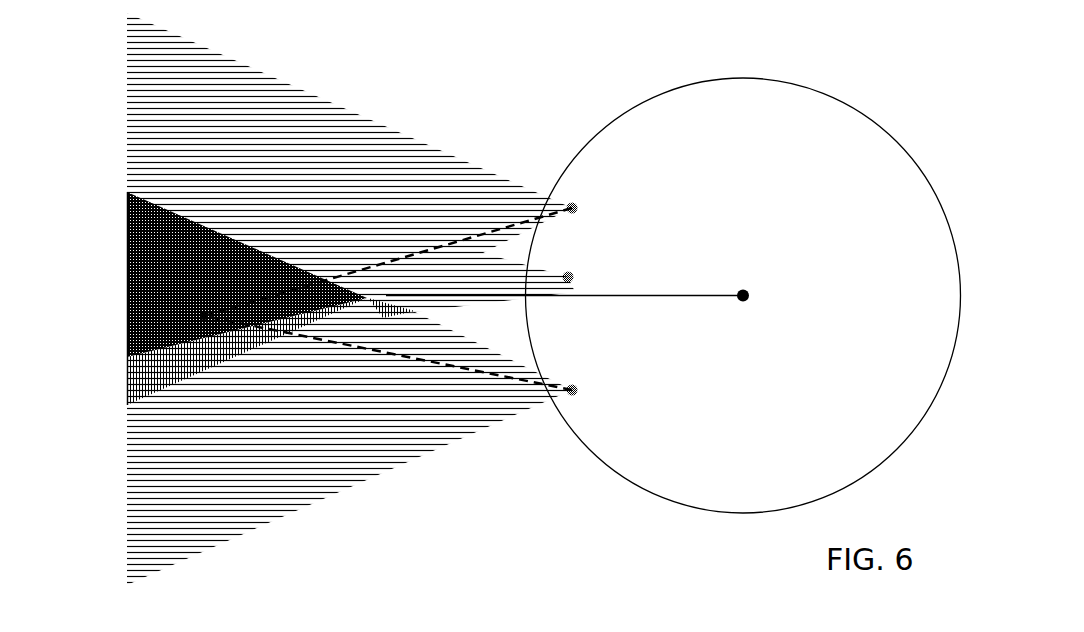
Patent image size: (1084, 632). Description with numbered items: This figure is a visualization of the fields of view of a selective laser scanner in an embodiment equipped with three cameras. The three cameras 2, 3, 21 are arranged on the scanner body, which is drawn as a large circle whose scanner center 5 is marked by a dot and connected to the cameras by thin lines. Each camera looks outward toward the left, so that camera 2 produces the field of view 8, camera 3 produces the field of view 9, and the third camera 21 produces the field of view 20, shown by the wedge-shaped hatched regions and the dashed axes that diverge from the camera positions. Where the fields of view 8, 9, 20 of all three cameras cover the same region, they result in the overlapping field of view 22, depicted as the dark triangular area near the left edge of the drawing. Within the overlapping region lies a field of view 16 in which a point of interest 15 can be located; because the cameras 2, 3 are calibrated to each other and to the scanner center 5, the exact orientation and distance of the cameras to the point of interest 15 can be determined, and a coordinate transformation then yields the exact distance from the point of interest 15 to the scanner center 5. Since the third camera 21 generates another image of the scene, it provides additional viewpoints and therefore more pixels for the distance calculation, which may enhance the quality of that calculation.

The camera 2 is at (572, 390).
The camera 3 is at (572, 208).
The scanner center 5 is at (743, 295).
The field of view 8 is at (275, 443).
The field of view 9 is at (368, 168).
The point of interest 15 is at (127, 362).
The field of view 16 is at (173, 383).
The field of view 20 is at (452, 277).
The third camera 21 is at (568, 277).
The overlapping field of view 22 is at (127, 213).